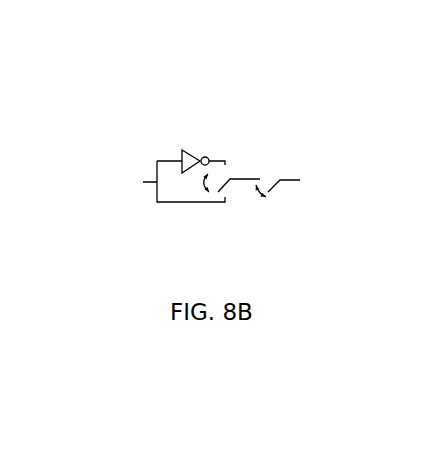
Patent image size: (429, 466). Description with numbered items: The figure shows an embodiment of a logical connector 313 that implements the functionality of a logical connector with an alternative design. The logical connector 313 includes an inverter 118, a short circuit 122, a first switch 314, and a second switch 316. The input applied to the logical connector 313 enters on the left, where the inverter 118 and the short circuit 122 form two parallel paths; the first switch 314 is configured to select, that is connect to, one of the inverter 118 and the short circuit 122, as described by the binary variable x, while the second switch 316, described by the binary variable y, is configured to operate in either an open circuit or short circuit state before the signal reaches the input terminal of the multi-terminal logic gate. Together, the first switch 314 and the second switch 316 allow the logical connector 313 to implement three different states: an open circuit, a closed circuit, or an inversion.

The logical connector 313 is at (179, 112).
The inverter 118 is at (192, 145).
The first switch 314 is at (235, 166).
The second switch 316 is at (296, 193).
The short circuit 122 is at (167, 205).